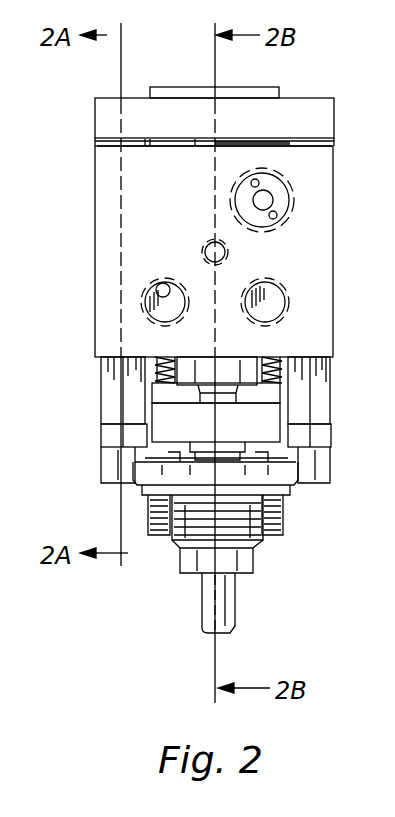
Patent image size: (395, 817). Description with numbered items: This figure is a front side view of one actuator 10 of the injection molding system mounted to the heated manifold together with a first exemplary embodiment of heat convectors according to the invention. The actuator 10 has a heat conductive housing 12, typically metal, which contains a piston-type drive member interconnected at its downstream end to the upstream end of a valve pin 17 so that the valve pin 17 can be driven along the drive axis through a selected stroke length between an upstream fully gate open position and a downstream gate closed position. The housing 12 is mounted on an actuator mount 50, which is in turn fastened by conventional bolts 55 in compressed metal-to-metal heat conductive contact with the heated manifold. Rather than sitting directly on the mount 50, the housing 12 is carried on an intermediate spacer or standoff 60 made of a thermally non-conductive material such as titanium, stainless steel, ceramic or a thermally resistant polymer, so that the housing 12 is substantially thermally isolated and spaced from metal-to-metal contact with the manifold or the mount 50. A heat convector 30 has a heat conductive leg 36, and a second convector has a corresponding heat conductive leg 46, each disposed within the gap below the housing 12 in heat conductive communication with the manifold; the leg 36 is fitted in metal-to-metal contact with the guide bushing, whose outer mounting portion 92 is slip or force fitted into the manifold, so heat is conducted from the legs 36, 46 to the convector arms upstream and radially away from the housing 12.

The actuator 10 is at (347, 98).
The actuator housing 12 is at (335, 172).
The valve pin 17 is at (236, 600).
The heat convector 30 is at (277, 86).
The heat conductive leg 36 is at (270, 413).
The heat conductive leg 46 is at (106, 433).
The actuator mount 50 is at (333, 467).
The bolts 55 is at (284, 512).
The spacer or standoff 60 is at (101, 402).
The outer mounting portion of the guide bushing 92 is at (262, 546).